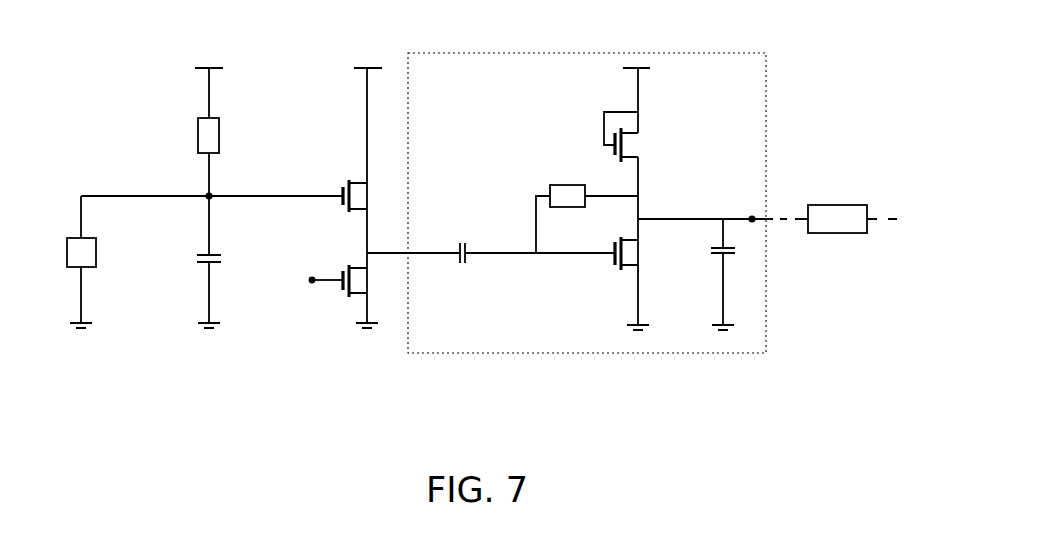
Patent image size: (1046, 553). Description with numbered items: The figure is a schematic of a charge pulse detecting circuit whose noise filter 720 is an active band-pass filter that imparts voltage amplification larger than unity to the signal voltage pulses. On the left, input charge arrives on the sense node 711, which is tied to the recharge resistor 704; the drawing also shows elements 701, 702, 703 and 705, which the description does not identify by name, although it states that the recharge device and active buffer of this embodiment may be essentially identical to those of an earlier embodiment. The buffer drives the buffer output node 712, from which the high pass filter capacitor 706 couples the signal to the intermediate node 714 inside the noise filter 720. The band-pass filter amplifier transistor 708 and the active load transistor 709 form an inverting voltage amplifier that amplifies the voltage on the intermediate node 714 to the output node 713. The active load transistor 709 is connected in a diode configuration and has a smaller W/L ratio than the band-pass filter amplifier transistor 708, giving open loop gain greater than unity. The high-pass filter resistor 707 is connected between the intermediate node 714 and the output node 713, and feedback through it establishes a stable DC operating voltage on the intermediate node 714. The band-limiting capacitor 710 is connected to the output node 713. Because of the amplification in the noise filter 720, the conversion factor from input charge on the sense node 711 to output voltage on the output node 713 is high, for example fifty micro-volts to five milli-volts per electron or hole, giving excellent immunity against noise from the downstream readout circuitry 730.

The input signal source 701 is at (63, 262).
The PMOS transistor 702 is at (370, 160).
The NMOS transistor 703 is at (353, 290).
The recharge resistor 704 is at (190, 132).
The capacitor CN 705 is at (217, 260).
The high pass filter capacitor 706 is at (480, 256).
The high-pass filter resistor 707 is at (587, 209).
The band-pass filter amplifier transistor 708 is at (642, 274).
The active load transistor 709 is at (637, 143).
The band-limiting capacitor 710 is at (733, 274).
The sense node 711 is at (212, 186).
The buffer output node 712 is at (413, 243).
The output node 713 is at (697, 210).
The intermediate node 714 is at (540, 243).
The noise filter 720 is at (587, 203).
The downstream readout circuitry 730 is at (824, 219).